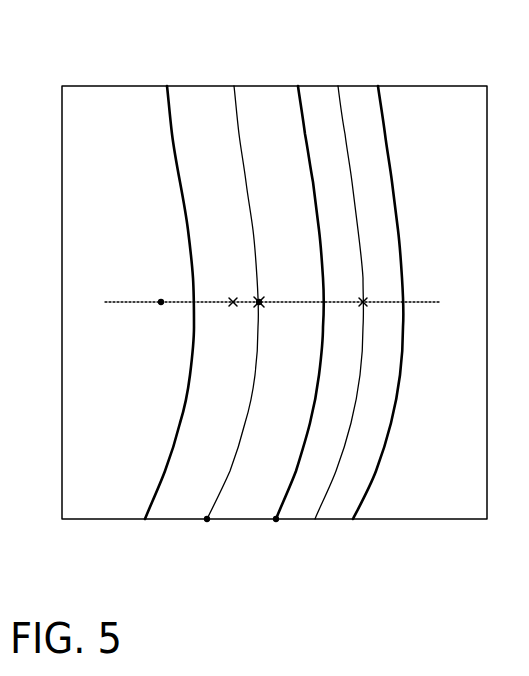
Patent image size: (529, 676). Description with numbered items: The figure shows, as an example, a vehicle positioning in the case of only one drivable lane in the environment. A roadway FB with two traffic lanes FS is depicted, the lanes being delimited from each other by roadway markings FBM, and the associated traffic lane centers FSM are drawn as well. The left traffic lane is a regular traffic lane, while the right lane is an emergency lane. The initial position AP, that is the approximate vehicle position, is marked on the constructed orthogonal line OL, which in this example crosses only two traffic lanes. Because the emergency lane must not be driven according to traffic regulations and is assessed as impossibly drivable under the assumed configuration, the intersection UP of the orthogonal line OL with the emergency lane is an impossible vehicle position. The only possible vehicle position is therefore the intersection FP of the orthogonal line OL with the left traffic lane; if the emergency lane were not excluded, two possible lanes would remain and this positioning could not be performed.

The roadway FB is at (382, 40).
The traffic lane FS is at (380, 78).
The intersection with the left traffic lane FP is at (259, 302).
The initial position AP is at (228, 319).
The intersection with the emergency lane UP is at (379, 319).
The orthogonal line OL is at (161, 302).
The traffic lane center FSM is at (207, 519).
The roadway marking FBM is at (276, 519).